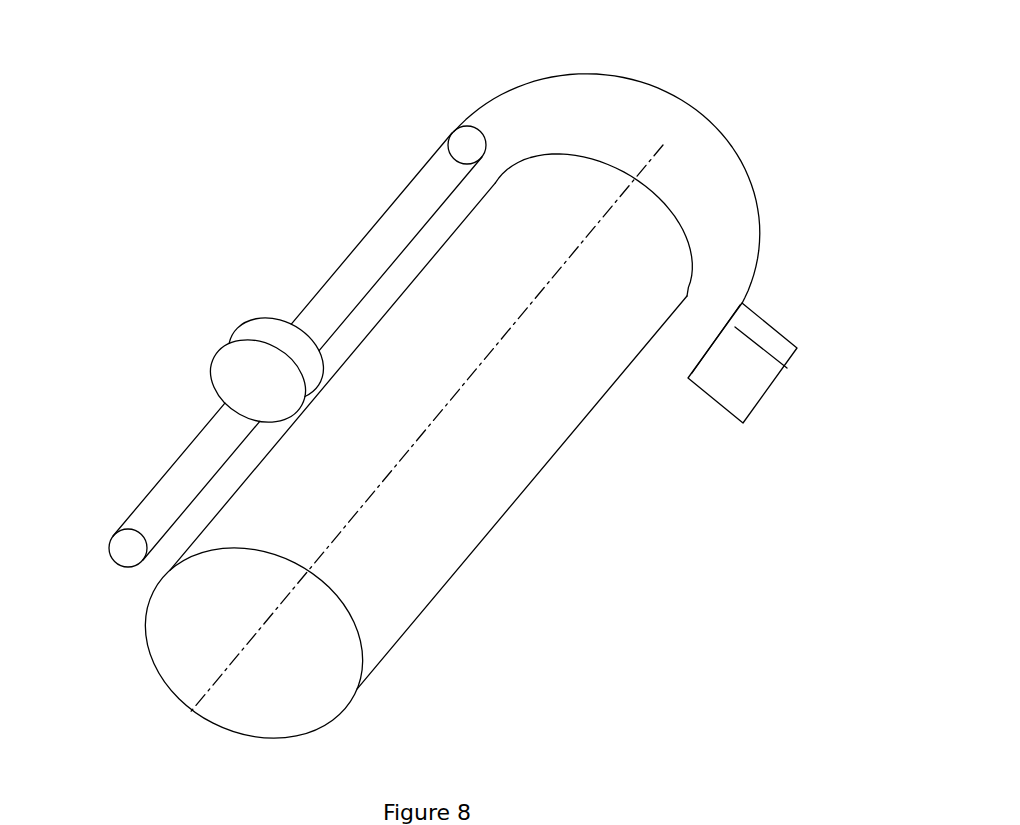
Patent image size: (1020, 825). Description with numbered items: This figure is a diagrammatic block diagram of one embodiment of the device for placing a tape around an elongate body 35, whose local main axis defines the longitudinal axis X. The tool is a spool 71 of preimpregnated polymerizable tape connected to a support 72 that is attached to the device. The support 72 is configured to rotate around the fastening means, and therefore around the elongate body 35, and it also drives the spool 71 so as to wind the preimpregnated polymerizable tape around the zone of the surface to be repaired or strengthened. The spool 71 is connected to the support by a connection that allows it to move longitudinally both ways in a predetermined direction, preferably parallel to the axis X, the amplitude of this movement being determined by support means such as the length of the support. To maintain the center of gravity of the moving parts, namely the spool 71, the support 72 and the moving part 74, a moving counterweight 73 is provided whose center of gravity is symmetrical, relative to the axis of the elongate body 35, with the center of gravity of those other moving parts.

The elongate body 35 is at (176, 645).
The spool 71 is at (214, 373).
The support 72 is at (402, 203).
The moving counterweight 73 is at (740, 406).
The moving part 74 is at (686, 104).